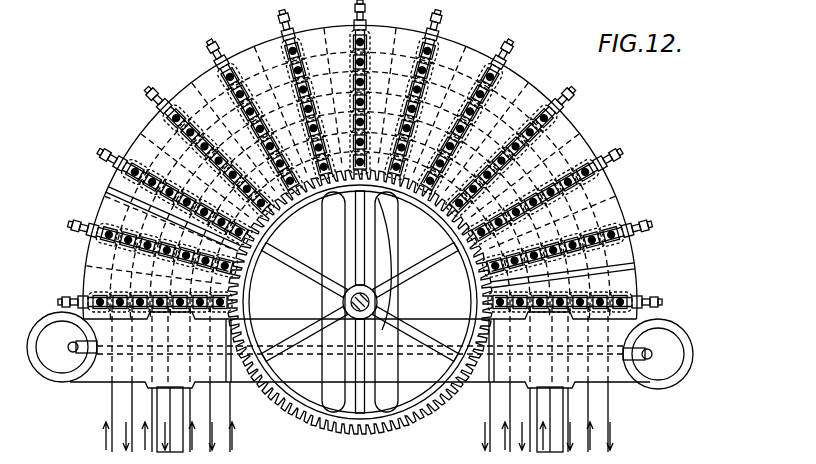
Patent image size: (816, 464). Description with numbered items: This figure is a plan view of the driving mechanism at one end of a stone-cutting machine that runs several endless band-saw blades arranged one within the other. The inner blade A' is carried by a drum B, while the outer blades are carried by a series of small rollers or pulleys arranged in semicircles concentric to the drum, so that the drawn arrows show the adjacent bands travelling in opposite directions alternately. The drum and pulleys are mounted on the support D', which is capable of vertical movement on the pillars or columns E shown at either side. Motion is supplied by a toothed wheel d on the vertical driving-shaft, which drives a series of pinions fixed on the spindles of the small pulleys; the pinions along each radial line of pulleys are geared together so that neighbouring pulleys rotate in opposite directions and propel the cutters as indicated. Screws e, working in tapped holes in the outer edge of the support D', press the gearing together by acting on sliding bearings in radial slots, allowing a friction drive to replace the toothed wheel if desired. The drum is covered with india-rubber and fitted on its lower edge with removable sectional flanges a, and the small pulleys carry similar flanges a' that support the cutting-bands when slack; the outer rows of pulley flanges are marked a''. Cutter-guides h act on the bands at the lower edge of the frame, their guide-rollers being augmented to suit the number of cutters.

The screw e is at (360, 154).
The removable flange a is at (360, 240).
The flange a' is at (449, 171).
The key block on arm (left side) a'' is at (212, 174).
The support D' is at (360, 203).
The drum B is at (360, 302).
The toothed wheel d is at (402, 402).
The inner blade A' is at (360, 382).
The cutter-guide h is at (360, 419).
The pillar or column E is at (360, 350).